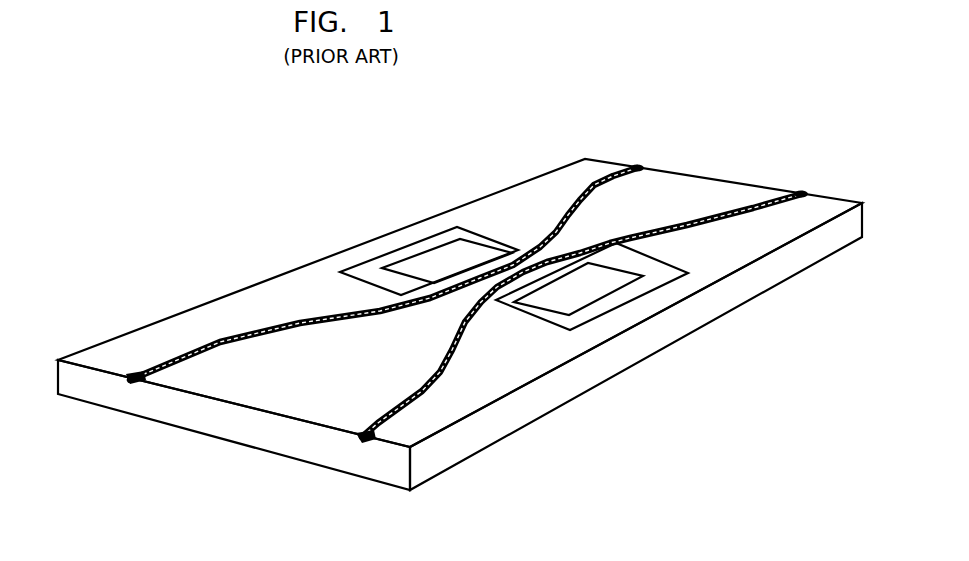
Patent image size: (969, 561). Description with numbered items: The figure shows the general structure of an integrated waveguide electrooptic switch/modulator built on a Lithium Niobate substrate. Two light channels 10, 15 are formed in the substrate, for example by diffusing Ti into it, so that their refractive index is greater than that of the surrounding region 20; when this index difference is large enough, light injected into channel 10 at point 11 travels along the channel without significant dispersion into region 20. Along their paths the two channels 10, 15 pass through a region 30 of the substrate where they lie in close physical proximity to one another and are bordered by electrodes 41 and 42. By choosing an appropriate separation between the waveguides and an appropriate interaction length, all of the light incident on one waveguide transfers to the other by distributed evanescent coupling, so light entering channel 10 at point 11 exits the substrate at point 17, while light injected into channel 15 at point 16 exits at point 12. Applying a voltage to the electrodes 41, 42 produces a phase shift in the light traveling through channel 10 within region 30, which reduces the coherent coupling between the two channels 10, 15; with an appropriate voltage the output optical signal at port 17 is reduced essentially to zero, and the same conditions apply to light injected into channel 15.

The channel 10 is at (435, 396).
The injection point 11 is at (360, 438).
The exit point 12 is at (802, 194).
The channel 15 is at (222, 342).
The injection point 16 is at (131, 381).
The exit point 17 is at (639, 170).
The region 20 is at (121, 348).
The region 30 is at (453, 236).
The electrode 41 is at (409, 267).
The electrode 42 is at (597, 293).